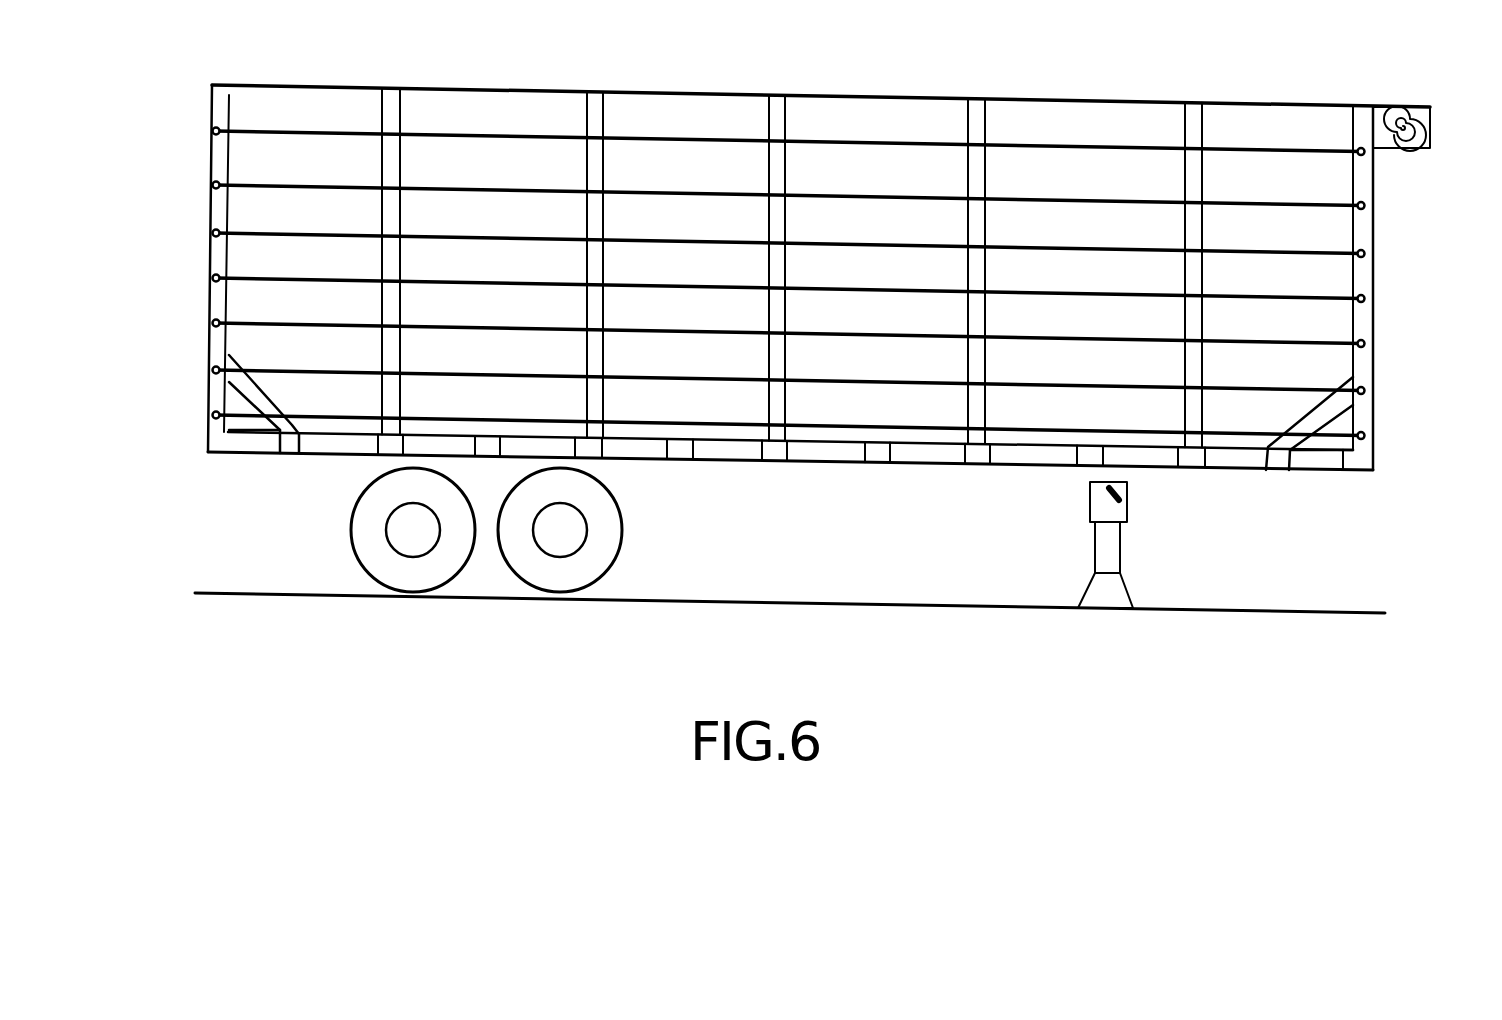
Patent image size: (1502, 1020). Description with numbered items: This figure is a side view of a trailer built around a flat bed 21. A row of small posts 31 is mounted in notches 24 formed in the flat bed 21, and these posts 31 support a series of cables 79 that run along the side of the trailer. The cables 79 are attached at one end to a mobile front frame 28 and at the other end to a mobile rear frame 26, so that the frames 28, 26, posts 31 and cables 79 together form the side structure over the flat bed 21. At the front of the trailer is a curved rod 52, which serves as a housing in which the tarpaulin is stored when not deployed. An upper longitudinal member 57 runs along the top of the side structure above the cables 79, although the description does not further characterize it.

The flat bed 21 is at (918, 465).
The notches 24 is at (783, 465).
The mobile rear frame 26 is at (216, 391).
The mobile front frame 28 is at (1362, 415).
The small posts 31 is at (1183, 378).
The curved rod 52 is at (1413, 150).
The top rail 57 is at (1068, 101).
The cables 79 is at (1290, 312).